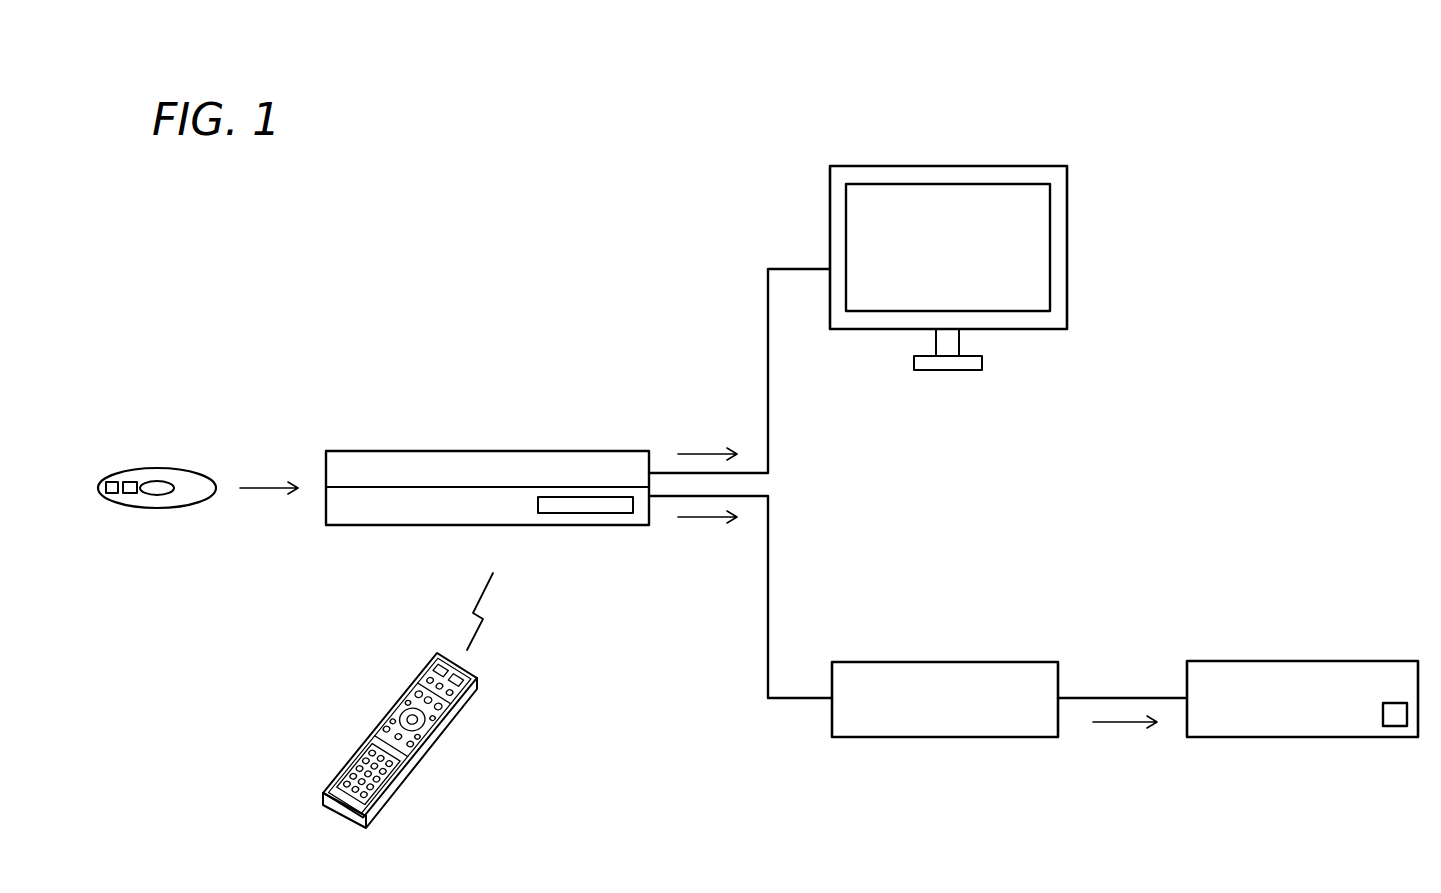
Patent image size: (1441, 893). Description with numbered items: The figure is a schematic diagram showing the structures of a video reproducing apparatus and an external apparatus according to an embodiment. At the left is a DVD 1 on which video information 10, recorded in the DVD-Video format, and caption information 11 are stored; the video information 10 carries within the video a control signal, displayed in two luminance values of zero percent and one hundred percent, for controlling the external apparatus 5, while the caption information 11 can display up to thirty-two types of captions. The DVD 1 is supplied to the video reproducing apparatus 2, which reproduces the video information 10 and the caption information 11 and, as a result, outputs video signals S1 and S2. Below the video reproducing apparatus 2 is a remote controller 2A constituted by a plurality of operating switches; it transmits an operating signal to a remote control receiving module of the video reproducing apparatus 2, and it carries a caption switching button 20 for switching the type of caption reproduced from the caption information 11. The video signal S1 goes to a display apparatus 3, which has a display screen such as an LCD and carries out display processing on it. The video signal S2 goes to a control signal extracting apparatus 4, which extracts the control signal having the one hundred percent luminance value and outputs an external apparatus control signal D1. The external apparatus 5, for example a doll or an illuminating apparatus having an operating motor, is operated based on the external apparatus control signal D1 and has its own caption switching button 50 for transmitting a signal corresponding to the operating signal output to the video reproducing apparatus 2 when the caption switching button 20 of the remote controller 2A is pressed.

The DVD 1 is at (138, 478).
The video information 10 is at (130, 493).
The caption information 11 is at (113, 493).
The video reproducing apparatus 2 is at (468, 452).
The remote controller 2A is at (390, 792).
The caption switching button 20 is at (375, 728).
The display apparatus 3 is at (891, 165).
The control signal extracting apparatus 4 is at (870, 738).
The external apparatus 5 is at (1240, 738).
The caption switching button 50 is at (1390, 718).
The video signal S1 is at (702, 452).
The video signal S2 is at (707, 520).
The external apparatus control signal D1 is at (1120, 727).